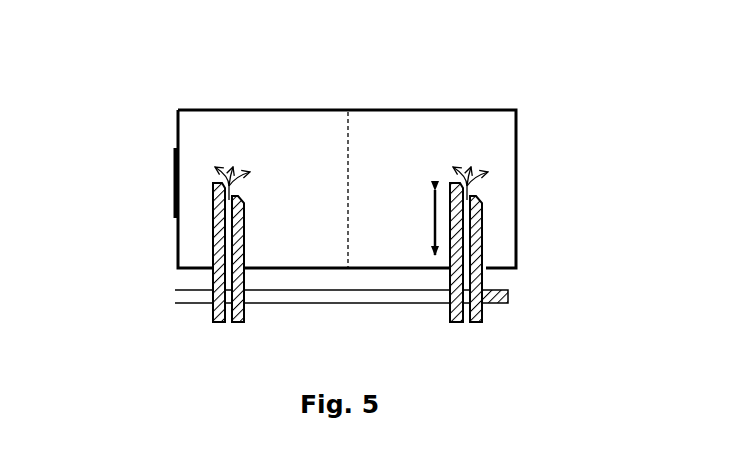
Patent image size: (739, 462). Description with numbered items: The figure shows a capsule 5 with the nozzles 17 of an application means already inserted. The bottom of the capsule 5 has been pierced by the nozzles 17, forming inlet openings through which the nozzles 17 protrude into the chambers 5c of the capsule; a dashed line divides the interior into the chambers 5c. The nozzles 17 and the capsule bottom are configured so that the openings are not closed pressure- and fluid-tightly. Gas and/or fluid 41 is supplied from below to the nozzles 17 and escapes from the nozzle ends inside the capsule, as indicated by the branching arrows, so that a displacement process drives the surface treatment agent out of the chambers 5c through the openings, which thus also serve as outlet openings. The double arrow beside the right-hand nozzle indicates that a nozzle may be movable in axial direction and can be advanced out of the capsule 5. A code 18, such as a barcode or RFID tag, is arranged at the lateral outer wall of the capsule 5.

The capsule 5 is at (516, 141).
The chambers 5c is at (294, 152).
The code 18 is at (174, 178).
The nozzles 17 is at (213, 228).
The gas and/or fluid 41 is at (228, 323).